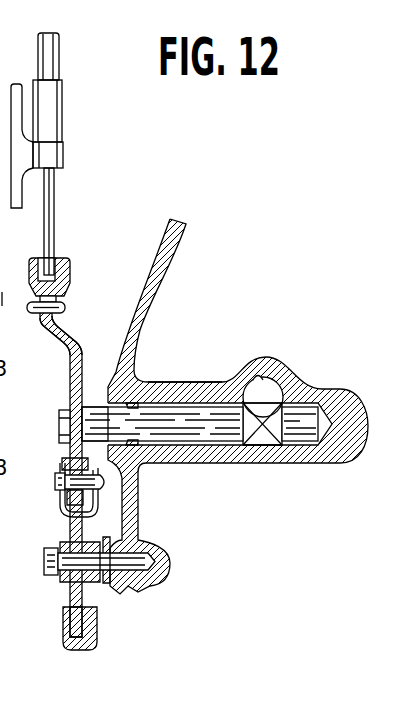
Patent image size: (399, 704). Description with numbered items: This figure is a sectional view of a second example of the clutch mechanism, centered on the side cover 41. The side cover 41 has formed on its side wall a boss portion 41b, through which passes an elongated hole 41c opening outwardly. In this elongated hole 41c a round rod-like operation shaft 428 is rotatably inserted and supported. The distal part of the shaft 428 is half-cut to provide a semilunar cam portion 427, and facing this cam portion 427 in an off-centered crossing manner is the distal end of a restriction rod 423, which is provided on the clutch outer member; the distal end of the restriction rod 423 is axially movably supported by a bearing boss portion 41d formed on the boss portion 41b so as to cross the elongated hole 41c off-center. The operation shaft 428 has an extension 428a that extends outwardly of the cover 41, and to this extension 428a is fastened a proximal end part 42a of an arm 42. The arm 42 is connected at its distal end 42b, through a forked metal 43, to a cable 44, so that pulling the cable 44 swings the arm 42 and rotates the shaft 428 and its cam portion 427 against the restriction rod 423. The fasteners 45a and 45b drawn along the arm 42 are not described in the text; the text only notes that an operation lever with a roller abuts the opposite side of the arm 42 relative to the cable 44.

The side cover 41 is at (238, 402).
The boss portion 41b is at (185, 382).
The elongated hole 41c is at (232, 441).
The bearing boss portion 41d is at (258, 377).
The arm 42 is at (67, 472).
The proximal end part 42a is at (68, 440).
The distal end 42b is at (57, 329).
The forked metal 43 is at (68, 270).
The cable 44 is at (53, 191).
The bolt 45a is at (88, 497).
The bolt 45b is at (68, 556).
The restriction rod 423 is at (274, 390).
The semilunar cam portion 427 is at (265, 443).
The operation shaft 428 is at (200, 460).
The extension 428a is at (83, 441).